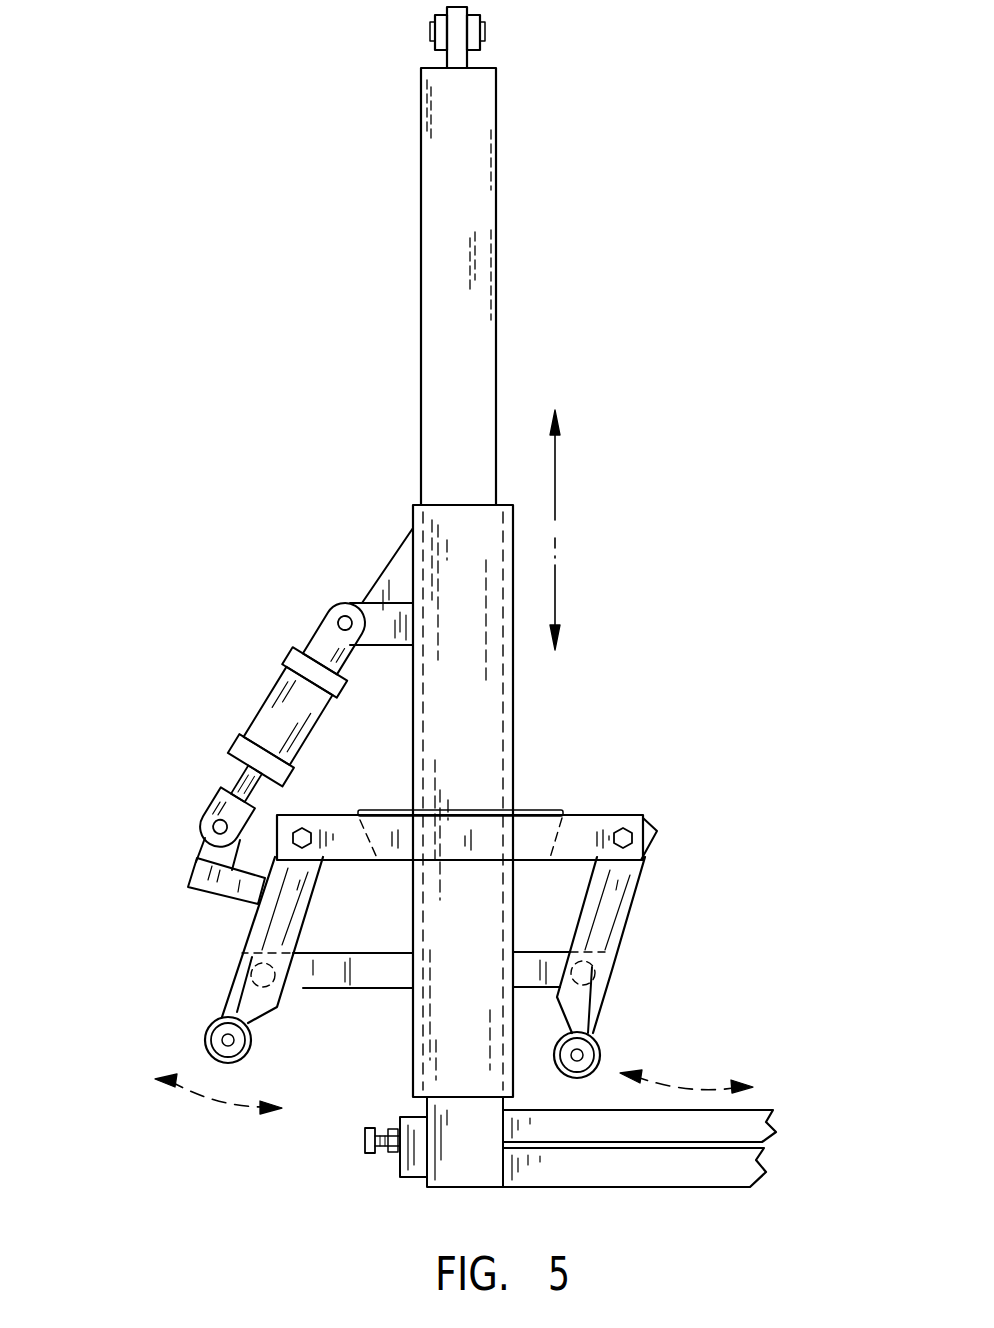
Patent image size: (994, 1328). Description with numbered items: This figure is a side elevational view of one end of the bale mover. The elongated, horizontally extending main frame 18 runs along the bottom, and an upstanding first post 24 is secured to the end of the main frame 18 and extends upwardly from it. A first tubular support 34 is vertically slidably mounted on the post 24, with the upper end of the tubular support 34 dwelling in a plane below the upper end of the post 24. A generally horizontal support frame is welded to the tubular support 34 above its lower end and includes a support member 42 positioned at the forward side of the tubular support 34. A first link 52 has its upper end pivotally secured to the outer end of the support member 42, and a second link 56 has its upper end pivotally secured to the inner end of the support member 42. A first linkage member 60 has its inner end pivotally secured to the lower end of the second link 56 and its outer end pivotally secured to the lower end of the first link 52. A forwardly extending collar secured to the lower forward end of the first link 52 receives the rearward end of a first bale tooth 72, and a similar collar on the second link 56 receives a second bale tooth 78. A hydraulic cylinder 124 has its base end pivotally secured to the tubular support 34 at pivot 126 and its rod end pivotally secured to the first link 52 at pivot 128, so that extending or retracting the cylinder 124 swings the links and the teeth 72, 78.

The main frame 18 is at (738, 1128).
The first post 24 is at (458, 266).
The first tubular support 34 is at (488, 686).
The support member 42 is at (573, 833).
The first link 52 is at (230, 928).
The second link 56 is at (635, 912).
The first linkage member 60 is at (535, 970).
The first bale tooth 72 is at (226, 1039).
The second bale tooth 78 is at (580, 1055).
The hydraulic cylinder 124 is at (300, 701).
The pivot 126 is at (330, 614).
The pivot 128 is at (218, 826).